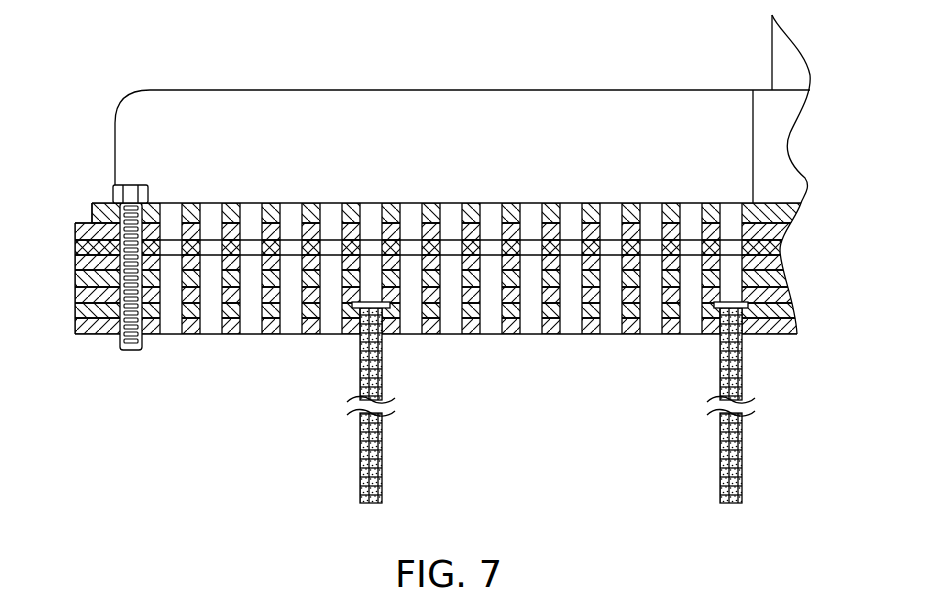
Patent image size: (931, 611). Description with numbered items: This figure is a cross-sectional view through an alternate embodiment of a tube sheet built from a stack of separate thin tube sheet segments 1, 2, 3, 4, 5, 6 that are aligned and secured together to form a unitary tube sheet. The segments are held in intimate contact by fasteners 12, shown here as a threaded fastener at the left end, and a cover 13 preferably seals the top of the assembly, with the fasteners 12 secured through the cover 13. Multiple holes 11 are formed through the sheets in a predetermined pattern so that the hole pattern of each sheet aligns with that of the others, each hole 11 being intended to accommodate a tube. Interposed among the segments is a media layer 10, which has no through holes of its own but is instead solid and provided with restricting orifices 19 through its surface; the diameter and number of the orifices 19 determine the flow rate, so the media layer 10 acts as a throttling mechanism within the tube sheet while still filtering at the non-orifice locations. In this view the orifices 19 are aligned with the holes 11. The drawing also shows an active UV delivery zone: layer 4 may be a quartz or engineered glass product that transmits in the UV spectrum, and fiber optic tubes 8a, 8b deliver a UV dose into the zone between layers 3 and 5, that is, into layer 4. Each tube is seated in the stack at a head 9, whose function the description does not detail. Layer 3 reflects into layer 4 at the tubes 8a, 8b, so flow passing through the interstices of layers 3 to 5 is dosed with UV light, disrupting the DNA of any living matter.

The tube sheet segment 1 is at (80, 222).
The tube sheet segment 2 is at (772, 262).
The tube sheet segment 3 is at (775, 277).
The tube sheet segment 4 is at (778, 298).
The tube sheet segment 5 is at (780, 310).
The tube sheet segment 6 is at (773, 332).
The fiber optic tube 8a is at (372, 367).
The fiber optic tube 8b is at (732, 380).
The pin head 9 is at (348, 302).
The media layer 10 is at (780, 247).
The hole 11 is at (452, 210).
The fastener 12 is at (131, 190).
The cover 13 is at (98, 196).
The restricting orifice 19 is at (248, 247).